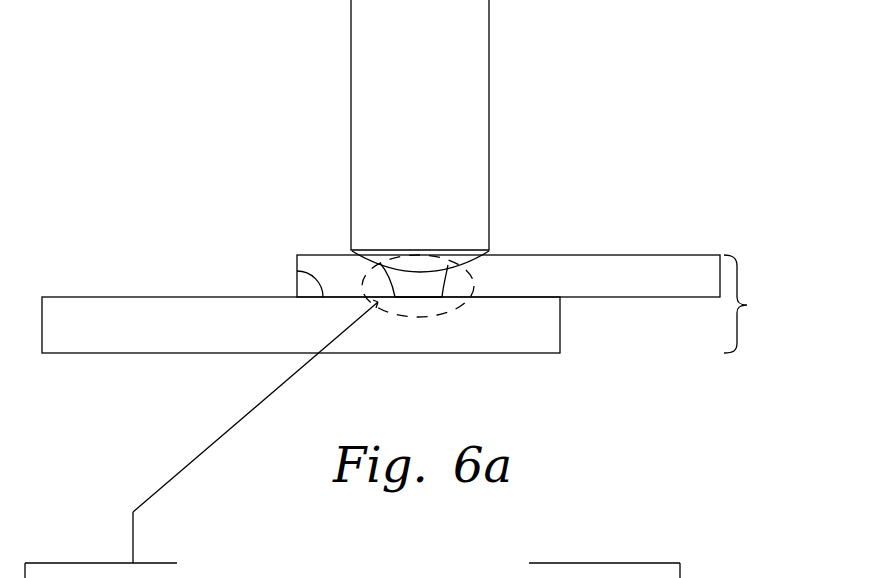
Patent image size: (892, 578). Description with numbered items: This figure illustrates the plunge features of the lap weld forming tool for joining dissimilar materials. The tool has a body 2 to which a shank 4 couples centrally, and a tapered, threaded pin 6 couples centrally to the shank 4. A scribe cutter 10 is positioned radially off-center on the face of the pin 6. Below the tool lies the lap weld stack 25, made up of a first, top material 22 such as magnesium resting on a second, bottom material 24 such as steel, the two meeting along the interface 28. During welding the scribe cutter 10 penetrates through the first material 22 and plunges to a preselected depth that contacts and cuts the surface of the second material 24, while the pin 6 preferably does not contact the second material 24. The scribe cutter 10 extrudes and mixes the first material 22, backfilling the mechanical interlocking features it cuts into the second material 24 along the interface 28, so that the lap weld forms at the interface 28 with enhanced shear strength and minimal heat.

The body 2 is at (411, 104).
The shank 4 is at (458, 263).
The pin 6 is at (445, 270).
The scribe cutter 10 is at (440, 303).
The first material 22 is at (631, 288).
The second material 24 is at (70, 340).
The lap weld stack 25 is at (757, 304).
The interface 28 is at (297, 272).